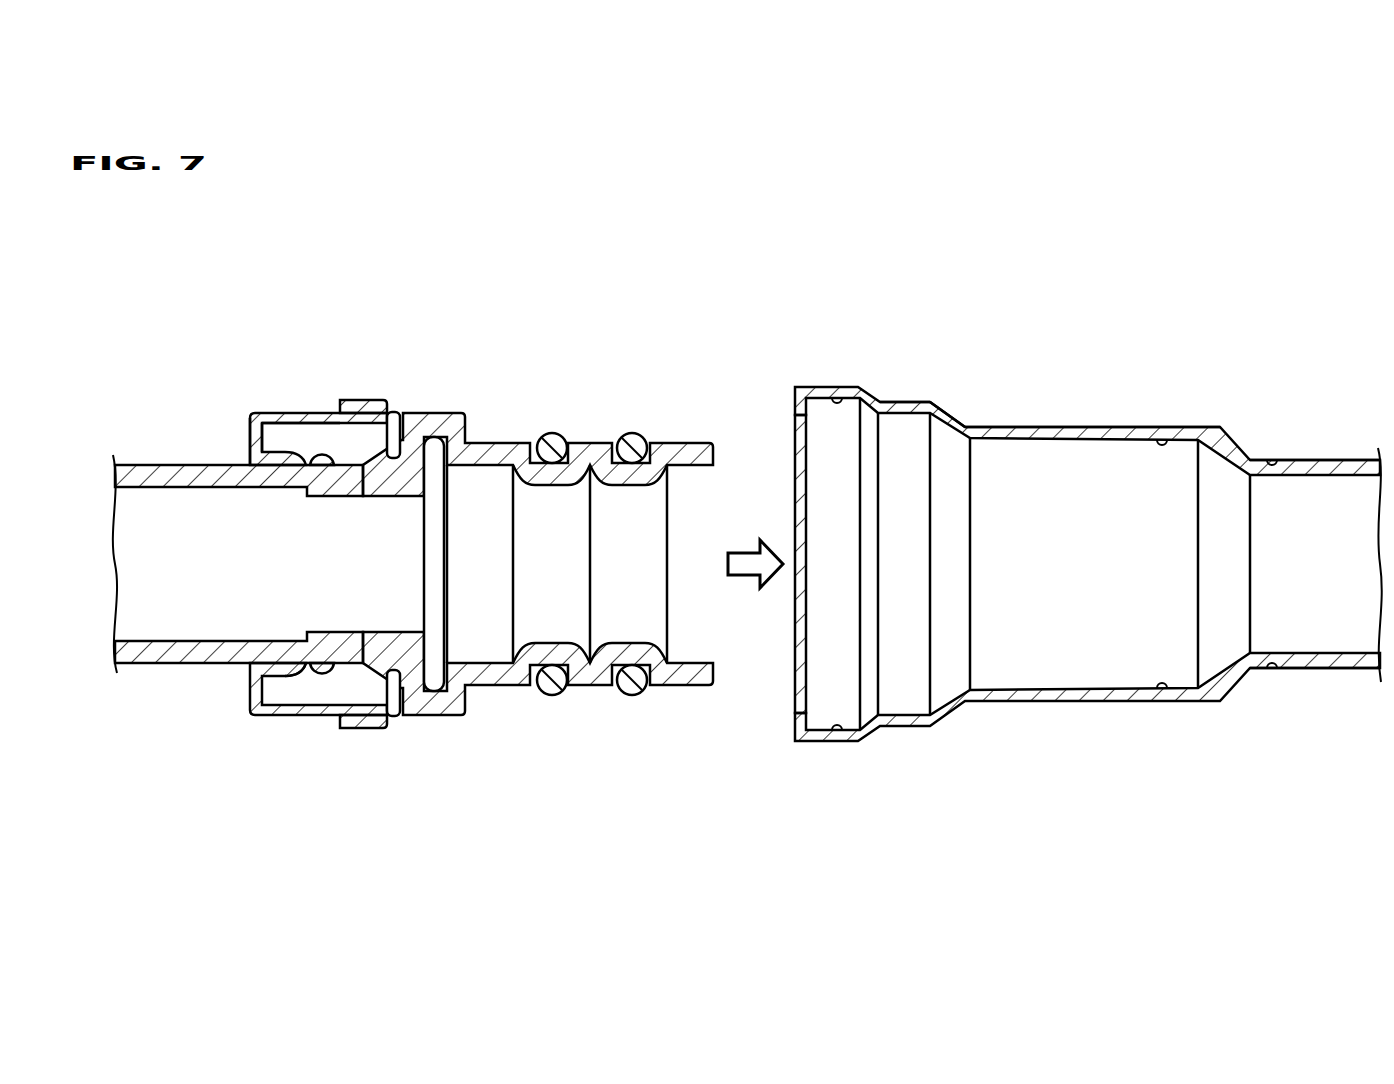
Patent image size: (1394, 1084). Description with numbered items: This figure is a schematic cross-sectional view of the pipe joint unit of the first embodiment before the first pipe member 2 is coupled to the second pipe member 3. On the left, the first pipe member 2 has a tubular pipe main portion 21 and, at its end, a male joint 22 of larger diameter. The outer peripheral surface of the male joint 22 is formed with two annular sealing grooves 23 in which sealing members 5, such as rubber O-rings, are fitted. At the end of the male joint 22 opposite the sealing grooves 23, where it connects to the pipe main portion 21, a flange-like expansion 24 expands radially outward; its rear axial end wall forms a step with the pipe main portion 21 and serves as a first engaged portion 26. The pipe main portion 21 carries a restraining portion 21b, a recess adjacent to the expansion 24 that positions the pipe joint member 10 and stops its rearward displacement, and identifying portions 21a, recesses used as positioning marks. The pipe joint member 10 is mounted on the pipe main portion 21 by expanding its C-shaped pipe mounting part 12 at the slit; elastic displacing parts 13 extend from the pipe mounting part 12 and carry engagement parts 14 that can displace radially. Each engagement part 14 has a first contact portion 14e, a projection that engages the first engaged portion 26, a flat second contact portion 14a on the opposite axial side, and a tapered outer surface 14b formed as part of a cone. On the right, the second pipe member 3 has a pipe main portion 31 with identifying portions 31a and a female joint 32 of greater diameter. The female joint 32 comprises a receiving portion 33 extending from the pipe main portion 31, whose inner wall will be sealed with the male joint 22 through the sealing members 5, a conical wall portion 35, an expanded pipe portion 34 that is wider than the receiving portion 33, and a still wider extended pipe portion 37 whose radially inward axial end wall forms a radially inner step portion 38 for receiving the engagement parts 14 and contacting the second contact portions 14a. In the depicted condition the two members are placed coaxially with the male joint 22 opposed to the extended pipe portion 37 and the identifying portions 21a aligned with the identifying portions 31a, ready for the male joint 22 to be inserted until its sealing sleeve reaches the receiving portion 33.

The first pipe member 2 is at (235, 584).
The pipe main portion 21 is at (183, 463).
The identifying portions 21a is at (234, 465).
The restraining portion 21b is at (281, 716).
The pipe joint member 10 is at (452, 561).
The pipe mounting part 12 is at (255, 415).
The elastic displacing parts 13 is at (303, 413).
The engagement parts 14 is at (357, 400).
The second contact portion 14a is at (345, 400).
The tapered outer surface 14b is at (393, 728).
The first contact portion 14e is at (410, 714).
The first engaged portion 26 is at (398, 412).
The expansion 24 is at (448, 418).
The male joint 22 is at (666, 694).
The sealing grooves 23 is at (561, 695).
The sealing members 5 is at (627, 695).
The second pipe member 3 is at (1075, 515).
The extended pipe portion 37 is at (798, 383).
The radially inner step portion 38 is at (833, 396).
The expanded pipe portion 34 is at (895, 403).
The conical wall portion 35 is at (962, 426).
The female joint 32 is at (1114, 420).
The receiving portion 33 is at (1164, 438).
The pipe main portion 31 is at (1345, 461).
The identifying portions 31a is at (1272, 459).